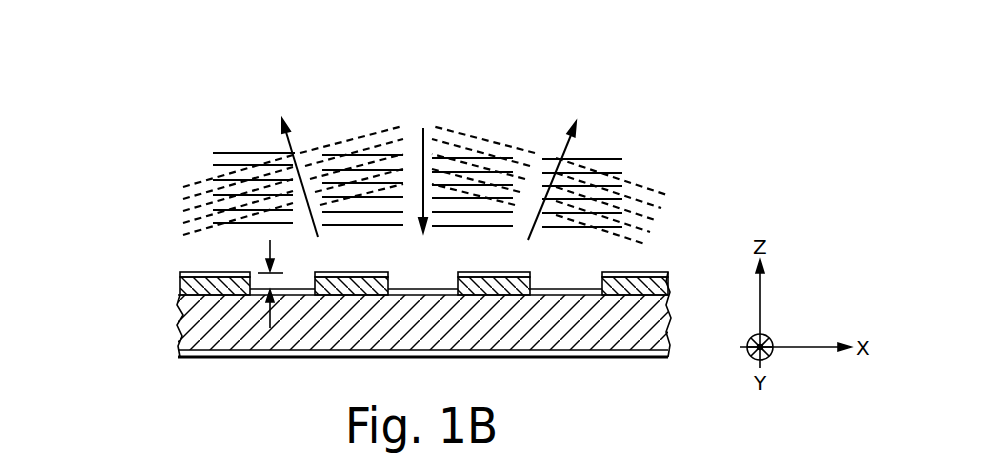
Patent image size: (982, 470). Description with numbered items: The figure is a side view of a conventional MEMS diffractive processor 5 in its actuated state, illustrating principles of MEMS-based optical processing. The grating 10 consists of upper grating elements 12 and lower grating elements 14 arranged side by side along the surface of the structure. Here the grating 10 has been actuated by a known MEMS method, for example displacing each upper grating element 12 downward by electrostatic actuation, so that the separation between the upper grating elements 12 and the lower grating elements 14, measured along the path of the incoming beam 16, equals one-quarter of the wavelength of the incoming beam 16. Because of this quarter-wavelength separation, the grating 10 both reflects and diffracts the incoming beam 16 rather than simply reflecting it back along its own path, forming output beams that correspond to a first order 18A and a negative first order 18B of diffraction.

The MEMS diffractive processor 5 is at (462, 78).
The grating 10 is at (404, 284).
The upper grating element 12 is at (663, 273).
The lower grating element 14 is at (554, 290).
The incoming beam 16 is at (656, 179).
The first order 18A is at (355, 138).
The negative first order 18B is at (492, 140).